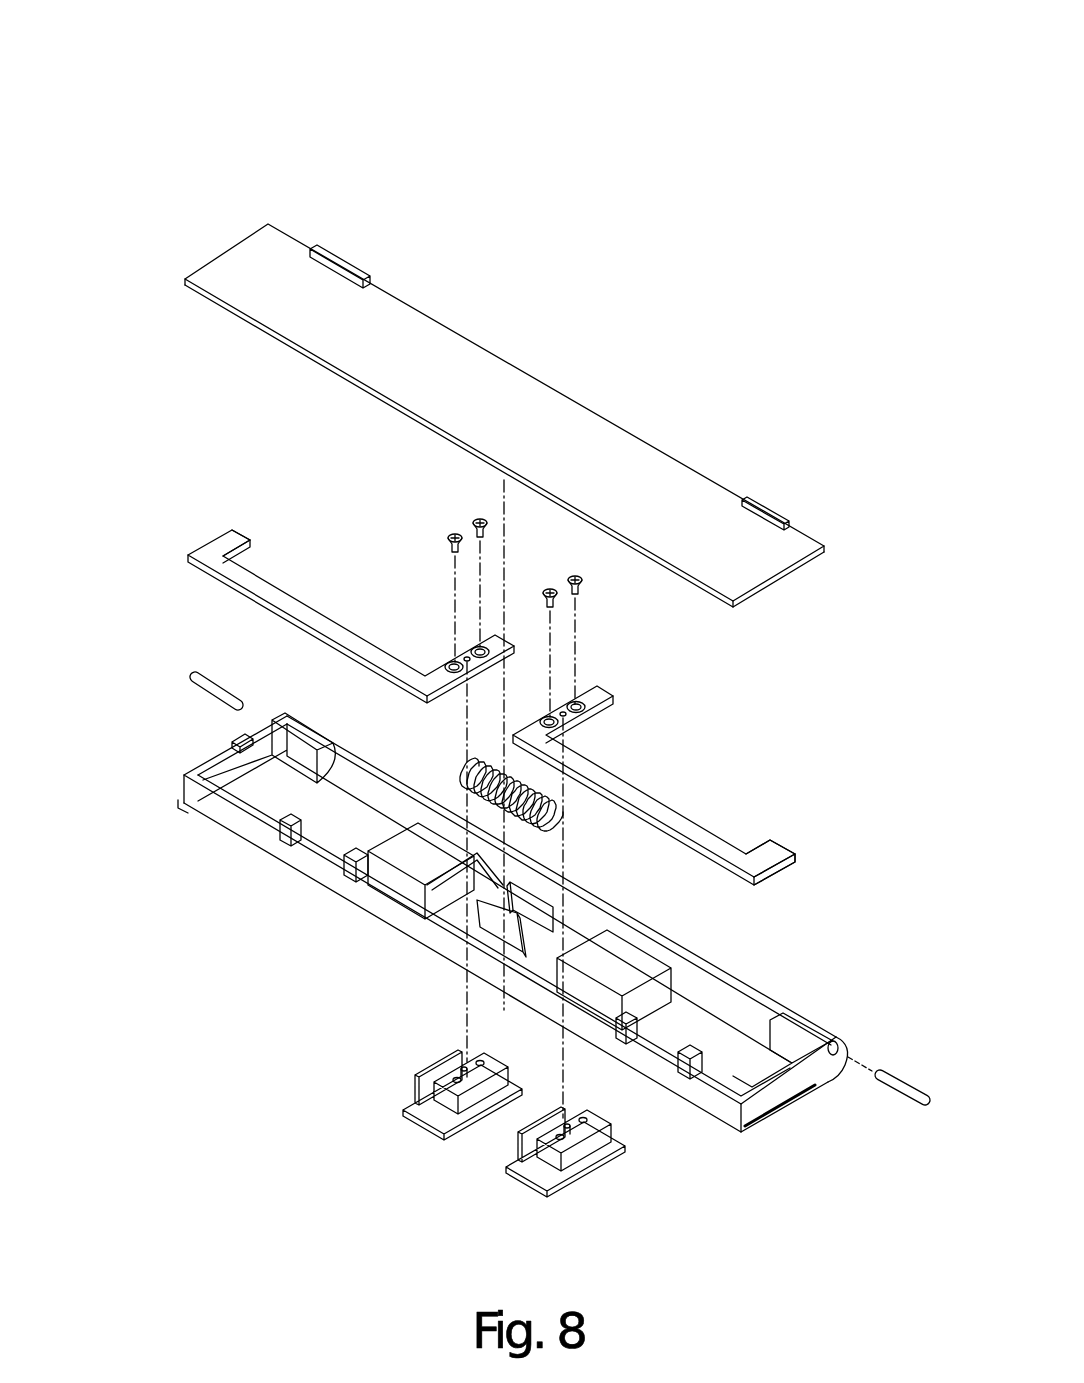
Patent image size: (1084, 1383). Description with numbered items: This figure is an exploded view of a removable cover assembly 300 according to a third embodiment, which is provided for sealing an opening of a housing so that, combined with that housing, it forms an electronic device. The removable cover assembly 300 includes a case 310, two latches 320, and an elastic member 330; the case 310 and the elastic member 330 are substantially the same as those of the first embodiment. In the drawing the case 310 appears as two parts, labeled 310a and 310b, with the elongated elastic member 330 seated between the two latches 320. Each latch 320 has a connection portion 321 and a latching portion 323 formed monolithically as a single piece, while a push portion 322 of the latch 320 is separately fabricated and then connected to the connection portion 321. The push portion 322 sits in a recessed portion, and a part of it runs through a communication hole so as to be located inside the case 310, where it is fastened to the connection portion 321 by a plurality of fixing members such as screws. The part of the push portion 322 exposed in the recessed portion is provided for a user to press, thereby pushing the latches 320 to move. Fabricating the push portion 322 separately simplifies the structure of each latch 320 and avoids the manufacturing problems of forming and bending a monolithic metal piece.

The removable cover assembly 300 is at (360, 102).
The case 310 is at (208, 107).
The housing base 310a is at (233, 747).
The housing cover plate 310b is at (262, 265).
The latch 320 is at (399, 531).
The connection portion 321 is at (335, 620).
The push portion 322 is at (415, 1083).
The latching portion 323 is at (218, 543).
The elastic member 330 is at (562, 823).